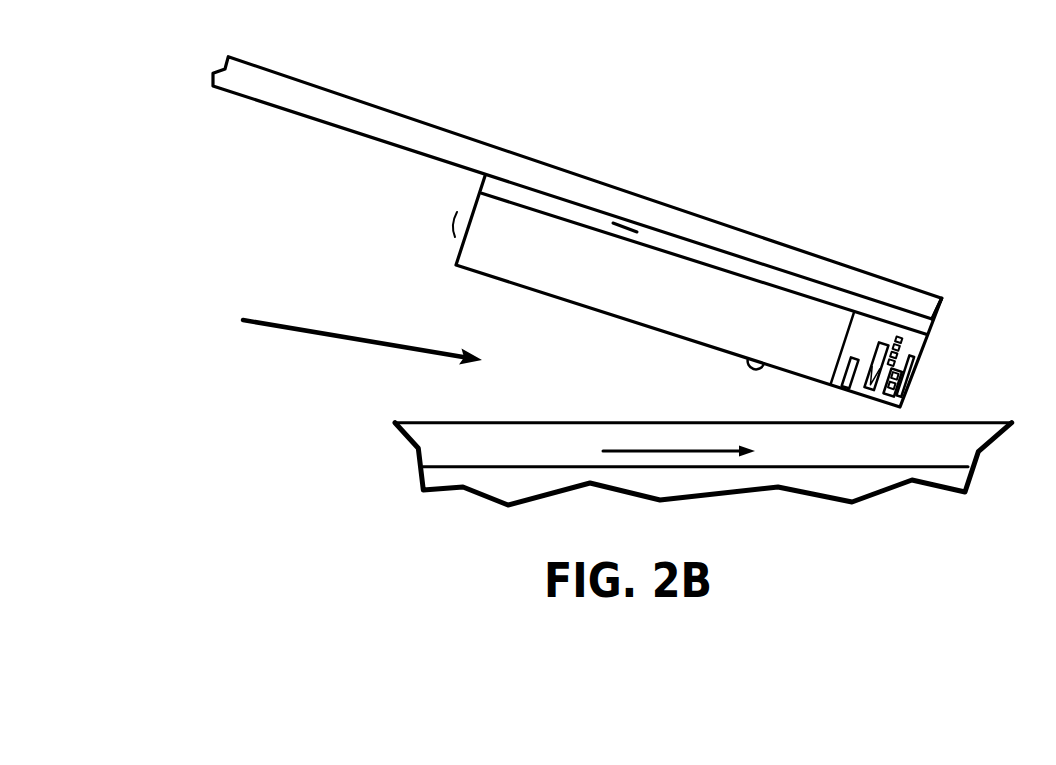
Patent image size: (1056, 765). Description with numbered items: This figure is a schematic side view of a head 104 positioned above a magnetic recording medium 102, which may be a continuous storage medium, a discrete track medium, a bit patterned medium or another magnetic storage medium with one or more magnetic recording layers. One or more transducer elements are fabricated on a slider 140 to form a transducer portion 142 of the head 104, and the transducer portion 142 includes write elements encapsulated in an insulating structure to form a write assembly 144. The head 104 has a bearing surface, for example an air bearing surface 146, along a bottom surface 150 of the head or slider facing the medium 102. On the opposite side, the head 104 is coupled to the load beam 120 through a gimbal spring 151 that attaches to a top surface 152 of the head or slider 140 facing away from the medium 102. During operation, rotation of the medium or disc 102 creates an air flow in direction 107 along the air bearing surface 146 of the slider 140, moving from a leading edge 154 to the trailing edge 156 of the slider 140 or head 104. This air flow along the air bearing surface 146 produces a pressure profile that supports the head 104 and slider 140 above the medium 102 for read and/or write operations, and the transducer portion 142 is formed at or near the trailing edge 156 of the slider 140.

The medium 102 is at (942, 455).
The head 104 is at (930, 286).
The air flow direction 107 is at (679, 450).
The load beam 120 is at (507, 167).
The slider 140 is at (663, 281).
The transducer portion 142 is at (938, 336).
The write assembly 144 is at (917, 325).
The air bearing surface 146 is at (626, 330).
The bottom surface 150 is at (763, 362).
The gimbal spring 151 is at (627, 222).
The top surface 152 is at (765, 278).
The leading edge 154 is at (427, 224).
The trailing edge 156 is at (920, 362).